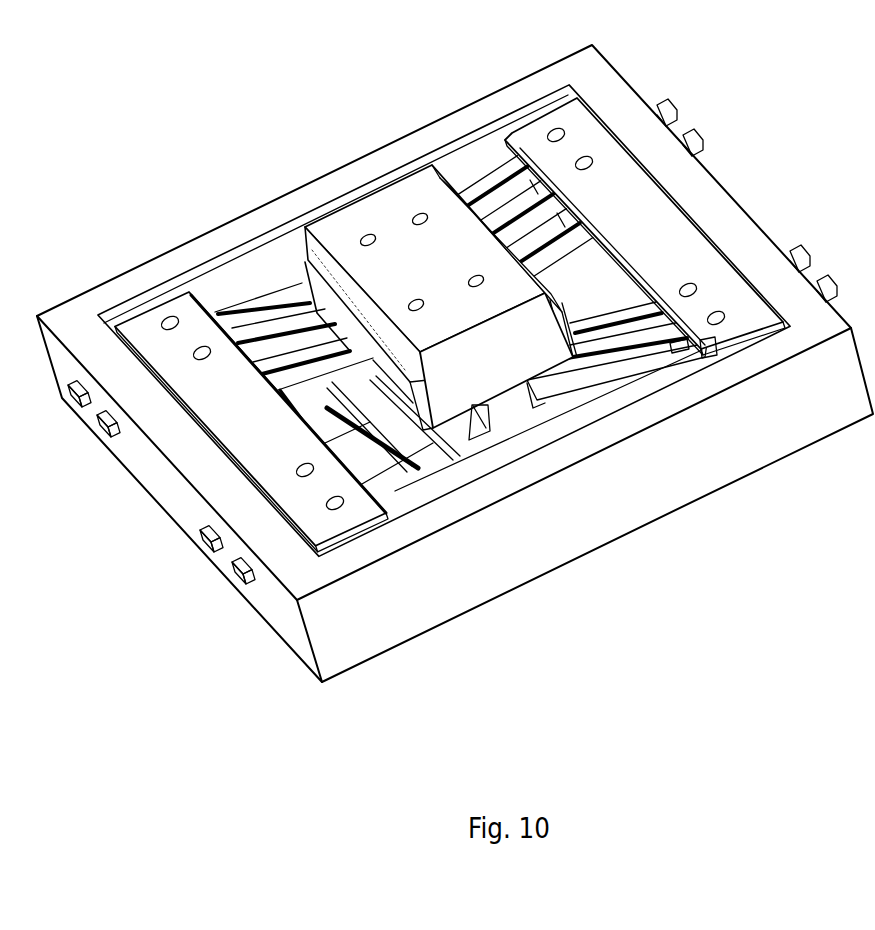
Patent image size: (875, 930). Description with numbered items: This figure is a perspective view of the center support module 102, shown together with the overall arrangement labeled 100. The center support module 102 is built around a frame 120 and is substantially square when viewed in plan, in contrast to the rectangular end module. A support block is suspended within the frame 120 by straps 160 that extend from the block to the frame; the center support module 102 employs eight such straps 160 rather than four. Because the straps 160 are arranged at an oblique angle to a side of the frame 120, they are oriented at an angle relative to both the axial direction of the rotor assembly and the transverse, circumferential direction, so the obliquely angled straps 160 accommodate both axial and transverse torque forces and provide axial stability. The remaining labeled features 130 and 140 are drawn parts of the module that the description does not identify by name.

The flexure stage assembly 100 is at (455, 348).
The center support module 102 is at (280, 86).
The frame 120 is at (577, 535).
The movable center block 130 is at (392, 193).
The mounting plates 140 is at (653, 220).
The straps 160 is at (247, 315).